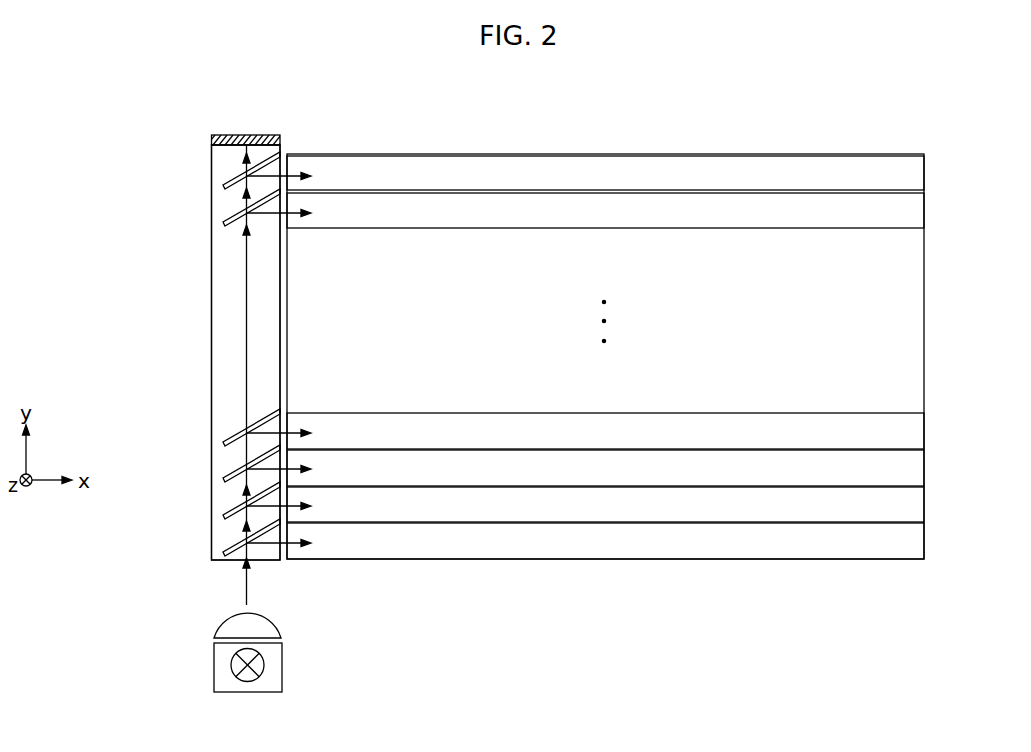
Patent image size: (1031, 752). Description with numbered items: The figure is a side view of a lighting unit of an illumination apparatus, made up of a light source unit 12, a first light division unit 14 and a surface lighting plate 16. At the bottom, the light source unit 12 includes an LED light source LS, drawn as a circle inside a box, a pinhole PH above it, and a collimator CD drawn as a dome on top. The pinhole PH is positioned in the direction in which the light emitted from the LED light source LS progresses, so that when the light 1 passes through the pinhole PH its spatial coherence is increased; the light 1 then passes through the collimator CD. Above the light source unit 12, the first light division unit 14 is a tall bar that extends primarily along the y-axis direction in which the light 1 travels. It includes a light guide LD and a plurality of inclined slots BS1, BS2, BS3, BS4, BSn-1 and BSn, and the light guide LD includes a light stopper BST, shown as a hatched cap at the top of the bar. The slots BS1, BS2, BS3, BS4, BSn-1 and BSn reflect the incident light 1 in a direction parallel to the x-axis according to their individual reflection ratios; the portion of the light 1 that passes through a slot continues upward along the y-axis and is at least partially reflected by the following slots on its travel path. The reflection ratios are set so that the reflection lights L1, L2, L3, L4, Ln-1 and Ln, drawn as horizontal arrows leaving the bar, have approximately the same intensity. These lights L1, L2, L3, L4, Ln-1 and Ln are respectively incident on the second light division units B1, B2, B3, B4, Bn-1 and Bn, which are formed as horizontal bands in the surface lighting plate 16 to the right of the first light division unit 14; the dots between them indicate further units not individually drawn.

The surface lighting plate 16 is at (588, 146).
The second light division unit Bn is at (924, 172).
The second light division unit Bn-1 is at (924, 210).
The second light division unit B4 is at (924, 430).
The second light division unit B3 is at (924, 468).
The second light division unit B2 is at (924, 505).
The second light division unit B1 is at (924, 541).
The first light division unit 14 is at (203, 375).
The light guide LD is at (212, 322).
The light stopper BST is at (212, 138).
The light 1 is at (250, 588).
The slot BSn is at (226, 186).
The slot BSn-1 is at (226, 223).
The slot BS4 is at (226, 443).
The slot BS3 is at (226, 479).
The slot BS2 is at (226, 516).
The slot BS1 is at (226, 553).
The reflection light Ln is at (281, 168).
The reflection light Ln-1 is at (289, 205).
The reflection light L4 is at (281, 425).
The reflection light L3 is at (281, 461).
The reflection light L2 is at (281, 498).
The reflection light L1 is at (281, 535).
The light source unit 12 is at (187, 655).
The collimator CD is at (225, 627).
The pinhole PH is at (214, 657).
The LED light source LS is at (232, 672).